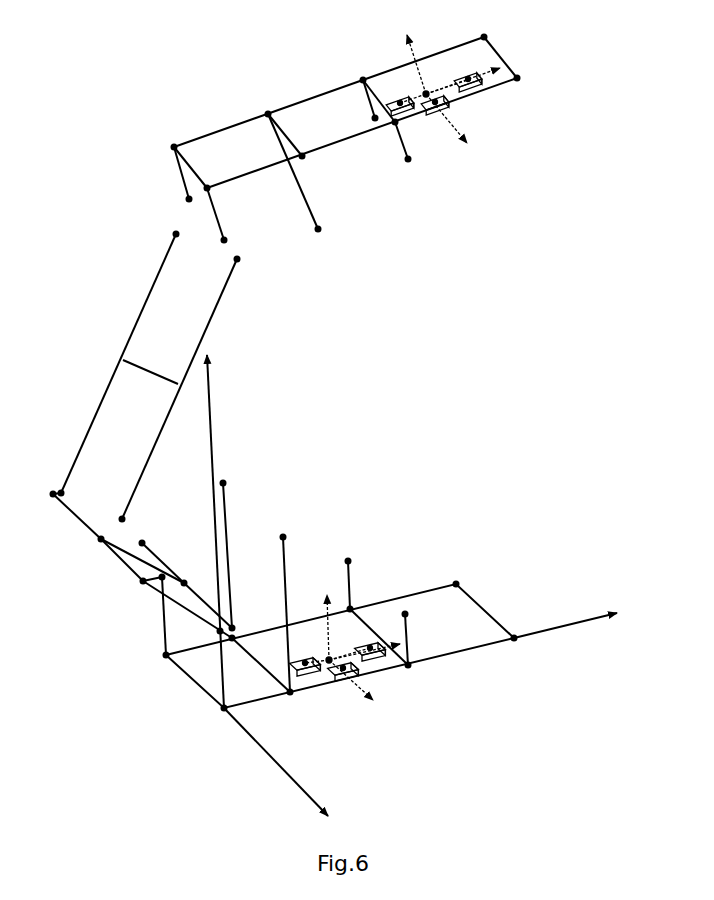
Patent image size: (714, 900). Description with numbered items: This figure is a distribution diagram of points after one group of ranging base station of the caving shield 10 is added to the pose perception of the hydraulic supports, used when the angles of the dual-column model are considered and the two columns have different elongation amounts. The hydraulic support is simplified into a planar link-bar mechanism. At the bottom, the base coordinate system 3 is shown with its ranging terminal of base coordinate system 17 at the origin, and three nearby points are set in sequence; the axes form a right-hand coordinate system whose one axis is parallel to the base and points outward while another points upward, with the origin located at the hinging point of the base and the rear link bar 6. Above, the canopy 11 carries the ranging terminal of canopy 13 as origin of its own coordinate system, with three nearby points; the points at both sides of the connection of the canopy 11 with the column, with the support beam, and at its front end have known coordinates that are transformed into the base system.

The base coordinate system 3 is at (430, 643).
The rear link bar 6 is at (142, 563).
The caving shield 10 is at (160, 313).
The canopy 11 is at (253, 147).
The ranging terminal of canopy 13 is at (392, 100).
The ranging terminal of base coordinate system 17 is at (352, 677).